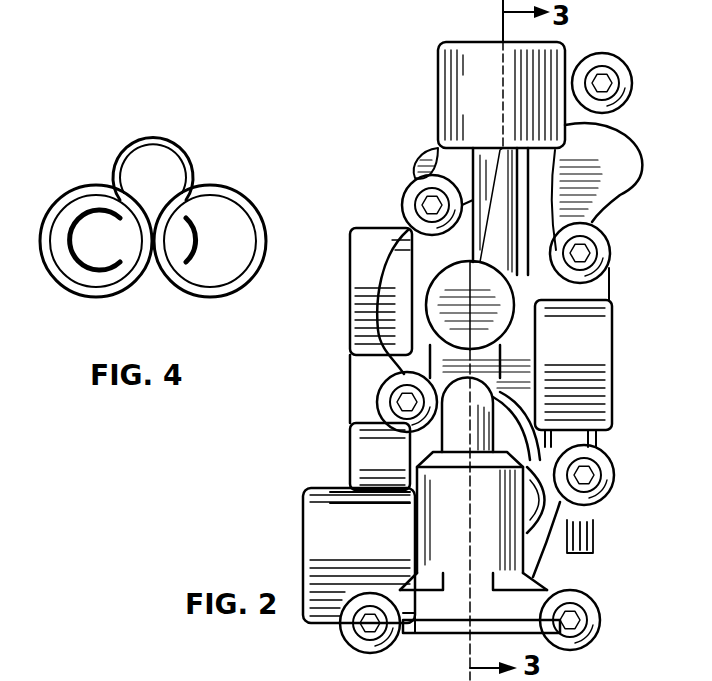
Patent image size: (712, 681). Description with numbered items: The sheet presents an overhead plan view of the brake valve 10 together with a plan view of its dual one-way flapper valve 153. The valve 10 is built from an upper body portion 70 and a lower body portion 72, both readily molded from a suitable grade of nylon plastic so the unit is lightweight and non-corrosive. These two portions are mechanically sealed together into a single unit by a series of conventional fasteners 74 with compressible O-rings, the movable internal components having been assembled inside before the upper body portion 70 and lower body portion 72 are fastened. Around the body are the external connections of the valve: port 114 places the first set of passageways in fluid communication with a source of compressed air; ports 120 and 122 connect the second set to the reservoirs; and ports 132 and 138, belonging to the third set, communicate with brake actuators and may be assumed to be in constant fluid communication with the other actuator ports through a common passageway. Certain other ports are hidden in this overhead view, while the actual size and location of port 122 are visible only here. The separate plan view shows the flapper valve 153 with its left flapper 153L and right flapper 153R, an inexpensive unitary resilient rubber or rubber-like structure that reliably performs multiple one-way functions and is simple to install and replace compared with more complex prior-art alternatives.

In FIG. 2, the valve 10 is at (388, 150).
In FIG. 2, the upper body portion 70 is at (488, 103).
In FIG. 2, the lower body portion 72 is at (383, 259).
In FIG. 2, the fasteners 74 is at (603, 80).
In FIG. 2, the port 114 is at (480, 42).
In FIG. 2, the port 120 is at (612, 355).
In FIG. 2, the port 122 is at (303, 543).
In FIG. 2, the port 132 is at (350, 278).
In FIG. 2, the port 138 is at (350, 437).
In FIG. 4, the flapper valve 153 is at (105, 318).
In FIG. 4, the left flapper 153L is at (93, 218).
In FIG. 4, the right flapper 153R is at (213, 230).